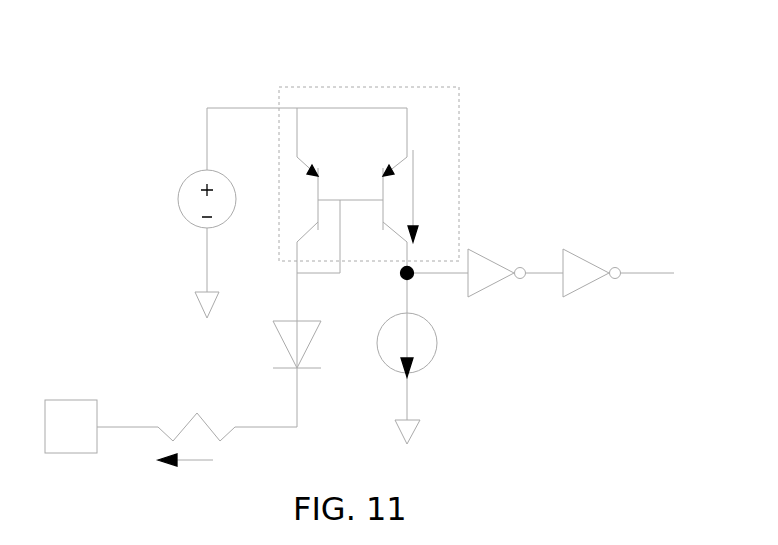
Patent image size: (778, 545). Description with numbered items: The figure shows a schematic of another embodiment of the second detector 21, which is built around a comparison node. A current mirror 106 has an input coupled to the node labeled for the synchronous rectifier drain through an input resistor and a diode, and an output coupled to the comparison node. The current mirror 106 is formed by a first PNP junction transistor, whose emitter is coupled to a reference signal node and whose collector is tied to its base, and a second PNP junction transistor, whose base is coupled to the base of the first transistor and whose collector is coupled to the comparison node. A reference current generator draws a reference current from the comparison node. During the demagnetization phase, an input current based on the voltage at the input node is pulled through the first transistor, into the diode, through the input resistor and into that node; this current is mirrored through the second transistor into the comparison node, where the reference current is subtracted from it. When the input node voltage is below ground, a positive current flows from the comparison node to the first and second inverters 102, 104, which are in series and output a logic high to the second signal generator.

The second detector 21 is at (523, 123).
The current mirror 106 is at (420, 86).
The first inverter 102 is at (504, 260).
The second inverter 104 is at (597, 254).